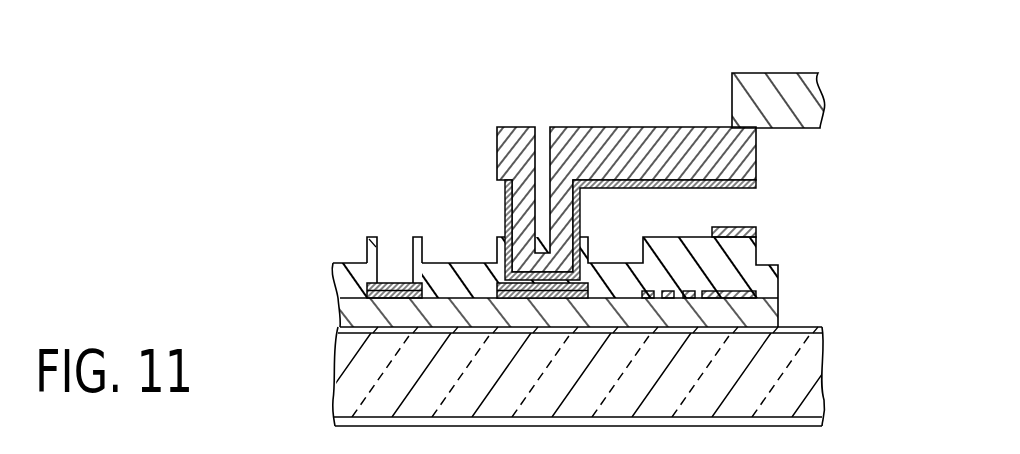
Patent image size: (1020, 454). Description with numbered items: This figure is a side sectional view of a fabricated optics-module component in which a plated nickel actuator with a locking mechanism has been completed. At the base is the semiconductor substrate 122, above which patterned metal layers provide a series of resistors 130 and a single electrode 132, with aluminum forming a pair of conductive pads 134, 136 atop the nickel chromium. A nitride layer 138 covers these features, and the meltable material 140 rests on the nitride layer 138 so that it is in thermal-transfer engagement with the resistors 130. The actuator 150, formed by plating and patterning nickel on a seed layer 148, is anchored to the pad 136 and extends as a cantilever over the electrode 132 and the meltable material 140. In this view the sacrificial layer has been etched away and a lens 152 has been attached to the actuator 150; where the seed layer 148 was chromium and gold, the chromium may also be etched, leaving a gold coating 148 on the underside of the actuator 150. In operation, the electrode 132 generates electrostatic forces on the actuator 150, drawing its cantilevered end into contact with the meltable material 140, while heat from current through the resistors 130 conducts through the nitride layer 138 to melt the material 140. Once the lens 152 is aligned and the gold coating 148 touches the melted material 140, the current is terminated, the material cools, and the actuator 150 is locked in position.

The semiconductor substrate 122 is at (336, 374).
The resistors 130 is at (690, 291).
The electrode 132 is at (757, 294).
The conductive pad 134 is at (396, 283).
The conductive pad 136 is at (497, 283).
The nitride layer 138 is at (333, 266).
The meltable material 140 is at (757, 232).
The seed layer 148 is at (757, 186).
The actuator 150 is at (757, 150).
The lens 152 is at (790, 73).